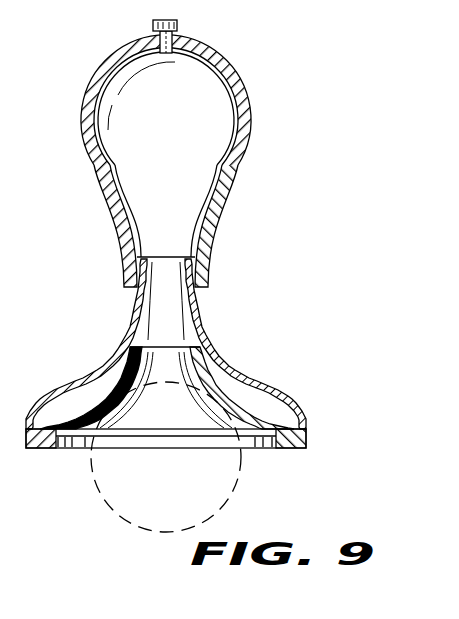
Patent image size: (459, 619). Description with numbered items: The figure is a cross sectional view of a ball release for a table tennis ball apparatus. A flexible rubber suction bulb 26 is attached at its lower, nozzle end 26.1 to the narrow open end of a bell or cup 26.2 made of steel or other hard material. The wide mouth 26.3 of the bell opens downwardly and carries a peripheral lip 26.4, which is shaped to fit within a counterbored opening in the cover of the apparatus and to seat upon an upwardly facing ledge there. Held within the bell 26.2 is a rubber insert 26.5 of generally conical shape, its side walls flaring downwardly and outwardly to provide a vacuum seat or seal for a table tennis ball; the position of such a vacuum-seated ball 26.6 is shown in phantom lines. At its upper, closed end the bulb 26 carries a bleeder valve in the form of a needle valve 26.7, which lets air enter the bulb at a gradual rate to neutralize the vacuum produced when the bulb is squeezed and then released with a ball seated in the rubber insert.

The flexible rubber suction bulb 26 is at (246, 90).
The lower nozzle end 26.1 is at (210, 270).
The bell or cup 26.2 is at (233, 362).
The wide mouth 26.3 is at (339, 384).
The peripheral lip 26.4 is at (293, 449).
The rubber insert 26.5 is at (222, 399).
The vacuum-seated ball 26.6 is at (103, 499).
The needle valve 26.7 is at (177, 25).